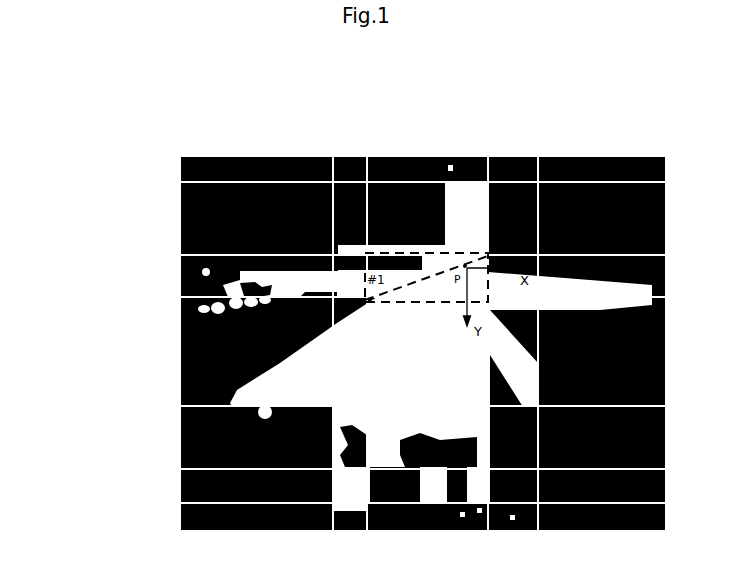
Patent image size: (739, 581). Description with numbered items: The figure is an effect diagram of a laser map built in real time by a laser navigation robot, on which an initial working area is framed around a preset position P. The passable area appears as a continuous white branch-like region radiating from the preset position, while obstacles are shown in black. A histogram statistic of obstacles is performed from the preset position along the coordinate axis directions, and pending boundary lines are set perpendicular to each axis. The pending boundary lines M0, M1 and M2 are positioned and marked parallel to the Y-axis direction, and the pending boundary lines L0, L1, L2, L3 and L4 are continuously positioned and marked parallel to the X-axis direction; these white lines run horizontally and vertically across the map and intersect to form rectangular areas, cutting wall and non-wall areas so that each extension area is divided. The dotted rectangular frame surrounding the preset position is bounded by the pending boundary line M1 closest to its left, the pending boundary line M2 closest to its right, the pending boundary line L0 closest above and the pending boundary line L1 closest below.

The pending boundary line L0 is at (170, 253).
The pending boundary line L1 is at (170, 295).
The pending boundary line L2 is at (170, 404).
The pending boundary line L3 is at (170, 467).
The pending boundary line L4 is at (170, 501).
The pending boundary line M0 is at (332, 148).
The pending boundary line M1 is at (367, 148).
The pending boundary line M2 is at (484, 148).